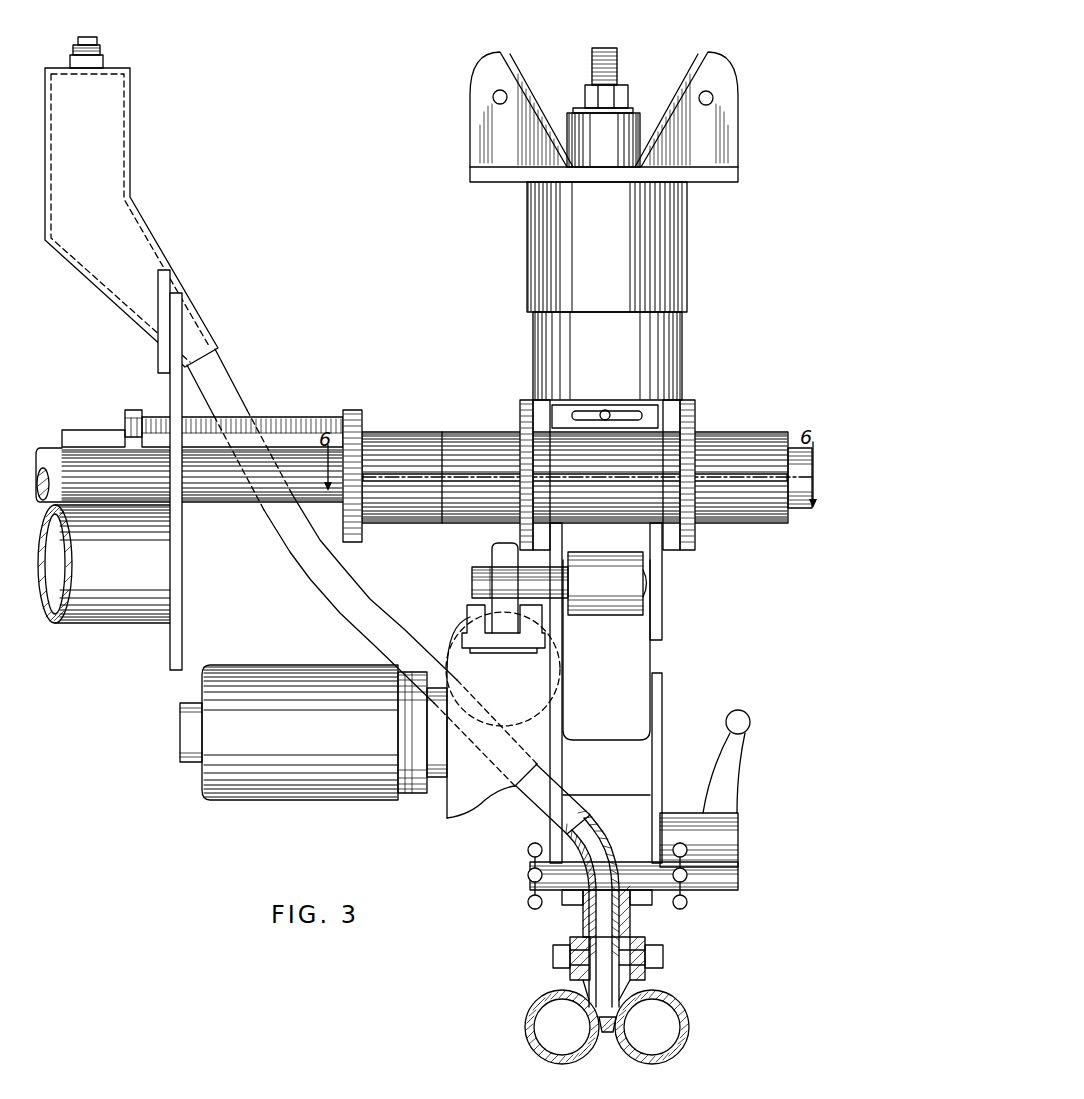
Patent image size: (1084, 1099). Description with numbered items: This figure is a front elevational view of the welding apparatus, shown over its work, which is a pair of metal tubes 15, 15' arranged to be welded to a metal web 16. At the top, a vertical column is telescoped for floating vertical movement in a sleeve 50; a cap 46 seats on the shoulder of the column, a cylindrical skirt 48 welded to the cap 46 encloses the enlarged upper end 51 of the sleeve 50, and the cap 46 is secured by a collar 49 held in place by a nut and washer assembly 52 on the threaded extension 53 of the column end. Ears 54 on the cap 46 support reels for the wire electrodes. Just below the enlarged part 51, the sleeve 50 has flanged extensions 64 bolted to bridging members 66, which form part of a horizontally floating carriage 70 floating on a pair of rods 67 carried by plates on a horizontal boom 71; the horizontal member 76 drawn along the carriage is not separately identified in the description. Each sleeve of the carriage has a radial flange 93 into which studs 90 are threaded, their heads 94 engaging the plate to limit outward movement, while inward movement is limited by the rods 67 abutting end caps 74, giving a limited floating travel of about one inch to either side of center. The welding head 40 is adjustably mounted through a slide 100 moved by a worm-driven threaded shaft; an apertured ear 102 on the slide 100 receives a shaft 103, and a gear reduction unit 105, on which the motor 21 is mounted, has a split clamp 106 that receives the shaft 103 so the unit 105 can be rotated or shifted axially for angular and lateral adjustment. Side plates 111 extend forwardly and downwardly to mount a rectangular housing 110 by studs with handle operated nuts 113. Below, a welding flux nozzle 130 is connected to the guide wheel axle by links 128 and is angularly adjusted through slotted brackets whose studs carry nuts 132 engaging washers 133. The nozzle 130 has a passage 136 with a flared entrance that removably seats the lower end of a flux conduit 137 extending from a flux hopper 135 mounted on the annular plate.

The flux hopper 135 is at (108, 138).
The flux conduit 137 is at (330, 584).
The horizontal boom 71 is at (128, 612).
The rods 67 is at (233, 500).
The studs 90 is at (279, 417).
The heads 94 is at (135, 410).
The radial flange 93 is at (353, 410).
The shaft 76 is at (393, 431).
The end caps 74 is at (772, 512).
The horizontally floating carriage 70 is at (440, 420).
The bridging members 66 is at (525, 415).
The flanged extensions 64 is at (533, 382).
The sleeve 50 is at (694, 318).
The cylindrical skirt 48 is at (677, 258).
The enlarged upper end 51 is at (665, 357).
The cap 46 is at (713, 178).
The ears 54 is at (475, 110).
The threaded extension 53 is at (618, 65).
The nut and washer assembly 52 is at (587, 92).
The collar 49 is at (640, 125).
The slide 100 is at (638, 665).
The side plates 111 is at (653, 738).
The rectangular housing 110 is at (612, 802).
The handle operated nuts 113 is at (687, 812).
The apertured ear 102 is at (612, 605).
The shaft 103 is at (492, 581).
The split clamp 106 is at (492, 551).
The gear reduction unit 105 is at (485, 798).
The welding head 40 is at (438, 818).
The motor 21 is at (262, 785).
The nuts 132 is at (550, 880).
The washers 133 is at (578, 903).
The passage 136 is at (595, 915).
The welding flux nozzle 130 is at (647, 940).
The links 128 is at (557, 975).
The metal tube 15 is at (537, 1027).
The metal tube 15' is at (680, 1027).
The metal web 16 is at (607, 1035).